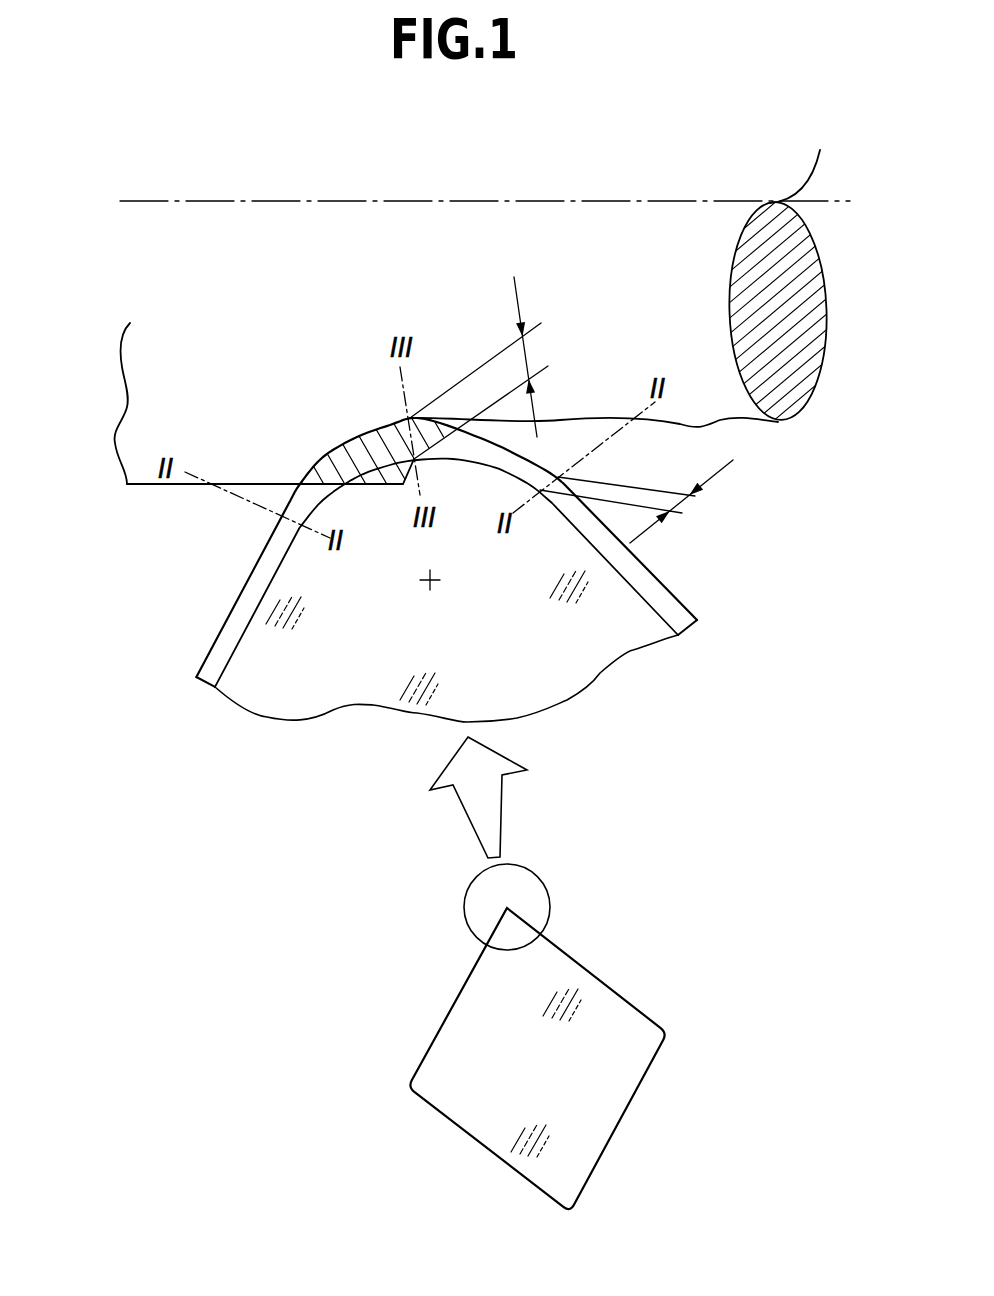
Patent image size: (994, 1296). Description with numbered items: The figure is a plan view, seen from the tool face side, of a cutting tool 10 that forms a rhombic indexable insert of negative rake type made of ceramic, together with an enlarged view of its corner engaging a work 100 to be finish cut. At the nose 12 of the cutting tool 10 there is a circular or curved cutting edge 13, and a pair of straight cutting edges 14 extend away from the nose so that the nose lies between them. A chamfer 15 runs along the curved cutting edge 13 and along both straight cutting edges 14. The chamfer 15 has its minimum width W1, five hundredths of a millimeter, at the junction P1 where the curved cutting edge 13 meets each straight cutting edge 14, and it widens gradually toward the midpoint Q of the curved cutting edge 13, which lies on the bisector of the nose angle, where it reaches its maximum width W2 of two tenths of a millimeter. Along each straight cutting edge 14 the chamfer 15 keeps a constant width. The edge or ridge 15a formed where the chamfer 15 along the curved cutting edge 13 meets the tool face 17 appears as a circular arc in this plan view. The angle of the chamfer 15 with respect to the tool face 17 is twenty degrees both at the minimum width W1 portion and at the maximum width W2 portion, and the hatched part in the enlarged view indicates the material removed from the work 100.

The cutting tool 10 is at (623, 647).
The nose 12 is at (313, 430).
The curved cutting edge 13 is at (373, 428).
The straight cutting edge 14 is at (684, 603).
The chamfer 15 is at (313, 497).
The edge or ridge 15a is at (455, 463).
The tool face 17 is at (305, 640).
The work 100 is at (712, 187).
The midpoint of the curved cutting edge Q is at (408, 417).
The junction P1 is at (560, 476).
The minimum width W1 is at (650, 501).
The maximum width W2 is at (488, 368).